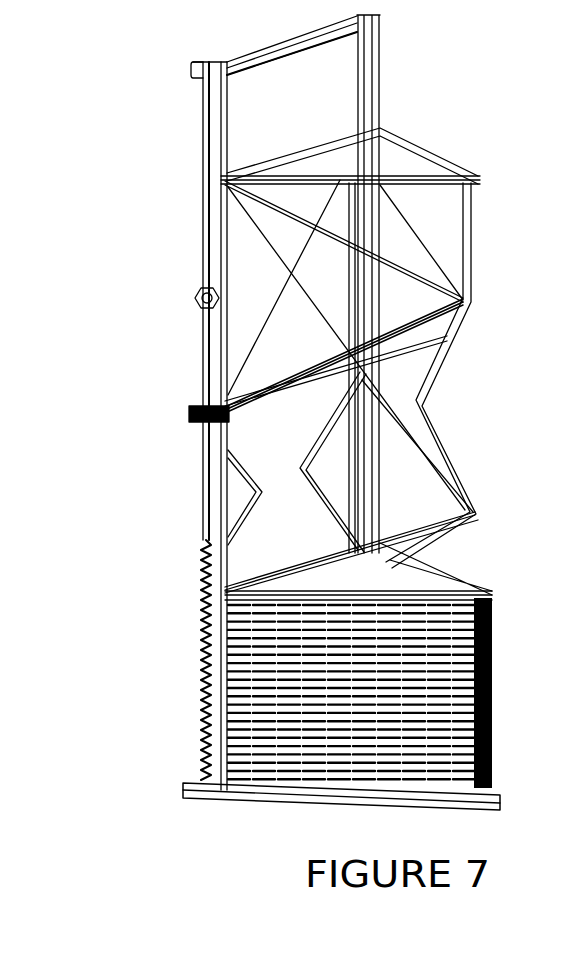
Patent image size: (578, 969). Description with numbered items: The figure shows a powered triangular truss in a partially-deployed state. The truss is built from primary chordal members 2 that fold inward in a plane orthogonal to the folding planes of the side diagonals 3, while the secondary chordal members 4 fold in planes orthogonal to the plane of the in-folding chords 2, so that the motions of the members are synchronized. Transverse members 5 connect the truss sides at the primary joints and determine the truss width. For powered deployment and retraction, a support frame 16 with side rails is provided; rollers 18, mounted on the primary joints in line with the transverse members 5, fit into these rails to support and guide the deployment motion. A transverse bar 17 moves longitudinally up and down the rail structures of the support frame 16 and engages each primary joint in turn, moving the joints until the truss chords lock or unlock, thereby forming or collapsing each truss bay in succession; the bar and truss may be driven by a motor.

The primary chordal member 2 is at (228, 427).
The side diagonal 3 is at (433, 390).
The secondary chordal member 4 is at (450, 360).
The transverse member 5 is at (228, 412).
The support frame 16 is at (380, 78).
The transverse bar 17 is at (193, 408).
The roller 18 is at (189, 421).